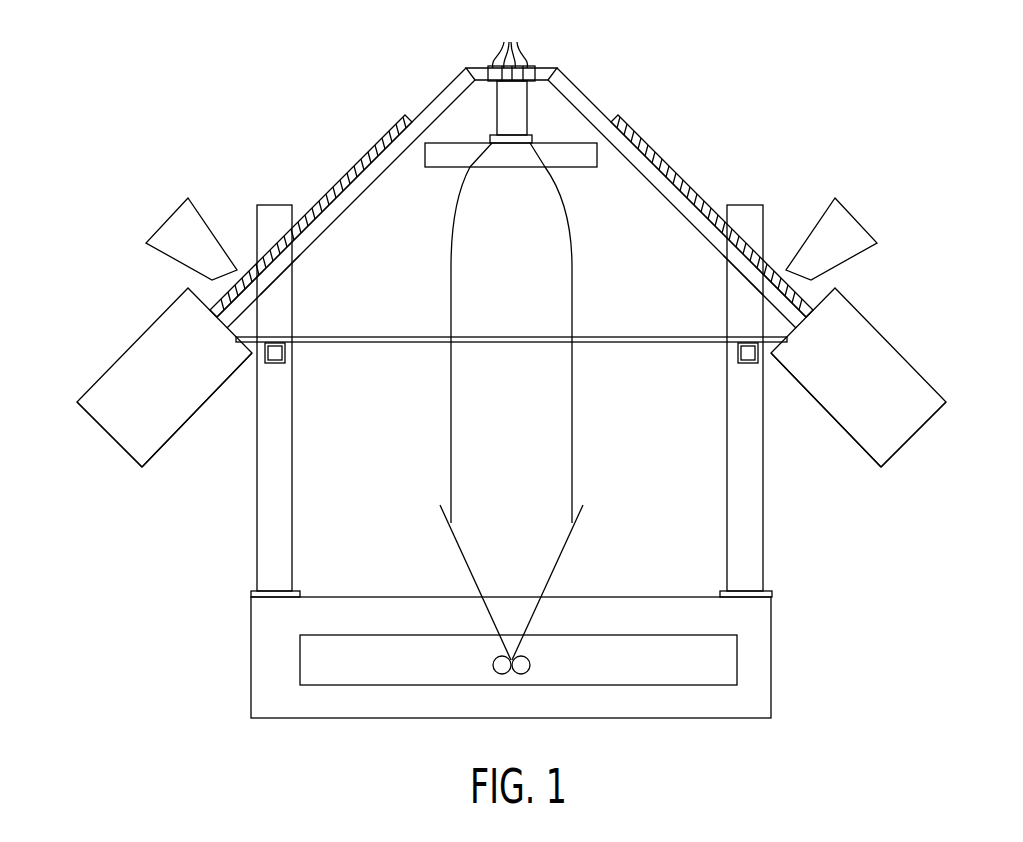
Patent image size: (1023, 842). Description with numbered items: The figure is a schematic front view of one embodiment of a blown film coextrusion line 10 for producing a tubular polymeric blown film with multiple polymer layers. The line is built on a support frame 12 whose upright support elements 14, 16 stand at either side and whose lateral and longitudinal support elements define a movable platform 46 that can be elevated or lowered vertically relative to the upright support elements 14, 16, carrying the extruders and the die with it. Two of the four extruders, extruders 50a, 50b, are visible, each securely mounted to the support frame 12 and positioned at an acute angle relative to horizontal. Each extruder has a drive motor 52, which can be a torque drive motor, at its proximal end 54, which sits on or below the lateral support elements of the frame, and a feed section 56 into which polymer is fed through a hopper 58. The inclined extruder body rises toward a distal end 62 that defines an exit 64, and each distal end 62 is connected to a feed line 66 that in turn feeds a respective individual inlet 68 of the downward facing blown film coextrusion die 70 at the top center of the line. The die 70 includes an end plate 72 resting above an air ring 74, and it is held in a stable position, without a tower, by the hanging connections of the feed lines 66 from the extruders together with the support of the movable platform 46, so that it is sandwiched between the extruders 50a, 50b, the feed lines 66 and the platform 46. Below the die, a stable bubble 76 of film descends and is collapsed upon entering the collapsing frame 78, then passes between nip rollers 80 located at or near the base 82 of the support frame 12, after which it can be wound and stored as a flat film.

The blown film coextrusion line 10 is at (697, 145).
The support frame 12 is at (775, 597).
The upright support element 14 is at (257, 520).
The upright support element 16 is at (750, 539).
The movable platform 46 is at (330, 343).
The extruder 50a is at (125, 352).
The extruder 50b is at (898, 352).
The drive motor 52 is at (135, 440).
The proximal end 54 is at (113, 410).
The feed section 56 is at (247, 300).
The hopper 58 is at (170, 219).
The distal end 62 is at (410, 114).
The exit 64 is at (423, 110).
The feed line 66 is at (457, 77).
The inlet 68 is at (510, 43).
The blown film coextrusion die 70 is at (515, 108).
The end plate 72 is at (488, 139).
The air ring 74 is at (580, 170).
The bubble 76 is at (572, 423).
The collapsing frame 78 is at (560, 548).
The nip rollers 80 is at (520, 677).
The base 82 is at (755, 673).